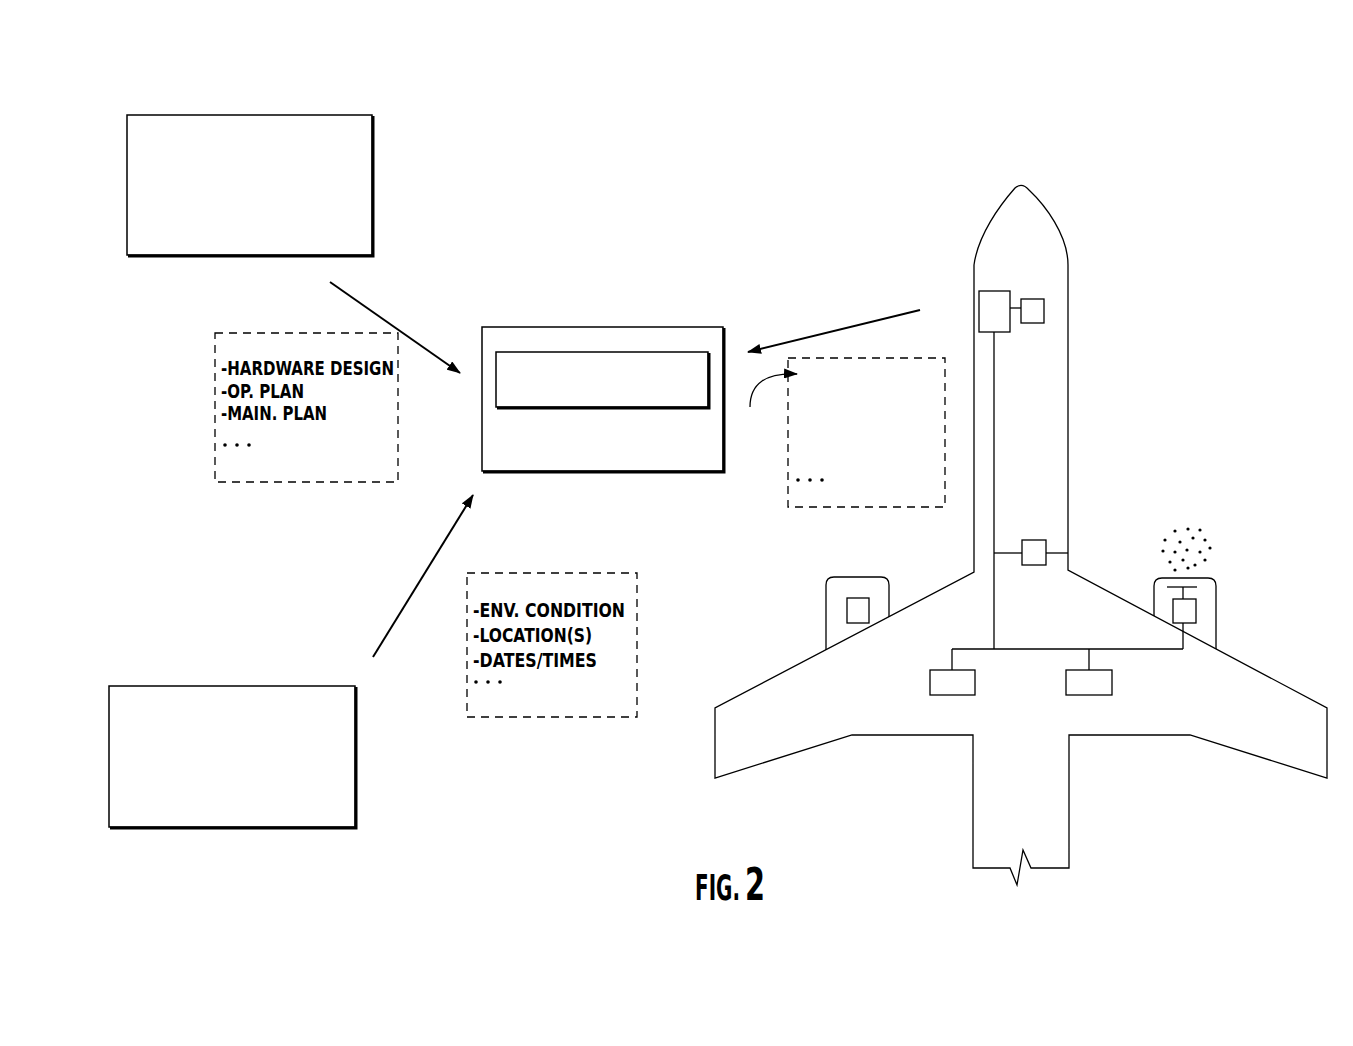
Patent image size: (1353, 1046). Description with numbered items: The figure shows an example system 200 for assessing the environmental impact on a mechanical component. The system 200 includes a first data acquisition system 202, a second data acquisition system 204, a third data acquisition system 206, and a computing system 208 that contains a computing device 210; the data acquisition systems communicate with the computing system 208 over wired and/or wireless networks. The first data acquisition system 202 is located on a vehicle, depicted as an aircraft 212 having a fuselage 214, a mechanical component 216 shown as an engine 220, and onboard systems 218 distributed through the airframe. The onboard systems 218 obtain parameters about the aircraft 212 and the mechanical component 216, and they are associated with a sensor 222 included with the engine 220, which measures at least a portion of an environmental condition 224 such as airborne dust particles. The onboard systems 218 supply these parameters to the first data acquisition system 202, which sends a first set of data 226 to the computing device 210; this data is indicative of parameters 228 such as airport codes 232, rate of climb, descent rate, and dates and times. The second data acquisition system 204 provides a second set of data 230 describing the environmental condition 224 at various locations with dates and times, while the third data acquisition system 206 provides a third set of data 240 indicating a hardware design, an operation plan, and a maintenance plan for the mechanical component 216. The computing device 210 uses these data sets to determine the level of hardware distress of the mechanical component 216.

The system 200 is at (243, 72).
The first data acquisition system 202 is at (994, 280).
The second data acquisition system 204 is at (215, 771).
The third data acquisition system 206 is at (232, 195).
The computing system 208 is at (636, 327).
The computing device 210 is at (620, 396).
The aircraft 212 is at (1021, 535).
The fuselage 214 is at (1055, 470).
The mechanical component 216 is at (1147, 596).
The onboard system 218 is at (1045, 308).
The engine 220 is at (993, 448).
The sensor 222 is at (1197, 592).
The environmental condition 224 is at (1200, 523).
The first set of data 226 is at (842, 328).
The parameter 228 is at (878, 507).
The second set of data 230 is at (417, 587).
The airport code 232 is at (766, 406).
The third set of data 240 is at (390, 322).